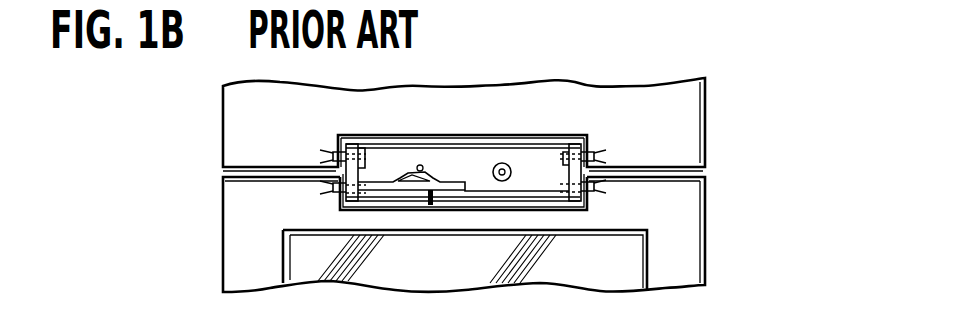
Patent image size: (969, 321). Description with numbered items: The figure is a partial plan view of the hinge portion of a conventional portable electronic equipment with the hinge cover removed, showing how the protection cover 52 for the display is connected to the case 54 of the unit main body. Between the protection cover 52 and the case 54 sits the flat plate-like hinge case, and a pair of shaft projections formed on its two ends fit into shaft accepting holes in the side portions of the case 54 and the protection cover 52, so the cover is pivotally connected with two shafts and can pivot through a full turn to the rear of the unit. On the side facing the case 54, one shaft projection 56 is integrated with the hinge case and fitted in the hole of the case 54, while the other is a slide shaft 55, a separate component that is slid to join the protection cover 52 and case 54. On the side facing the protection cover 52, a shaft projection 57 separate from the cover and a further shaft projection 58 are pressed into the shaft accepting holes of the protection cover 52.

The protection cover 52 is at (705, 92).
The case 54 is at (705, 252).
The slide shaft 55 is at (332, 184).
The shaft projection 56 is at (594, 186).
The shaft projection 57 is at (594, 156).
The shaft projection 58 is at (333, 156).